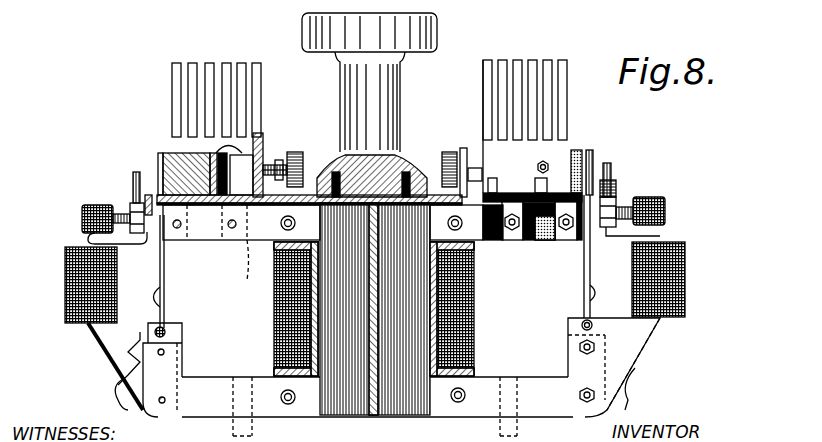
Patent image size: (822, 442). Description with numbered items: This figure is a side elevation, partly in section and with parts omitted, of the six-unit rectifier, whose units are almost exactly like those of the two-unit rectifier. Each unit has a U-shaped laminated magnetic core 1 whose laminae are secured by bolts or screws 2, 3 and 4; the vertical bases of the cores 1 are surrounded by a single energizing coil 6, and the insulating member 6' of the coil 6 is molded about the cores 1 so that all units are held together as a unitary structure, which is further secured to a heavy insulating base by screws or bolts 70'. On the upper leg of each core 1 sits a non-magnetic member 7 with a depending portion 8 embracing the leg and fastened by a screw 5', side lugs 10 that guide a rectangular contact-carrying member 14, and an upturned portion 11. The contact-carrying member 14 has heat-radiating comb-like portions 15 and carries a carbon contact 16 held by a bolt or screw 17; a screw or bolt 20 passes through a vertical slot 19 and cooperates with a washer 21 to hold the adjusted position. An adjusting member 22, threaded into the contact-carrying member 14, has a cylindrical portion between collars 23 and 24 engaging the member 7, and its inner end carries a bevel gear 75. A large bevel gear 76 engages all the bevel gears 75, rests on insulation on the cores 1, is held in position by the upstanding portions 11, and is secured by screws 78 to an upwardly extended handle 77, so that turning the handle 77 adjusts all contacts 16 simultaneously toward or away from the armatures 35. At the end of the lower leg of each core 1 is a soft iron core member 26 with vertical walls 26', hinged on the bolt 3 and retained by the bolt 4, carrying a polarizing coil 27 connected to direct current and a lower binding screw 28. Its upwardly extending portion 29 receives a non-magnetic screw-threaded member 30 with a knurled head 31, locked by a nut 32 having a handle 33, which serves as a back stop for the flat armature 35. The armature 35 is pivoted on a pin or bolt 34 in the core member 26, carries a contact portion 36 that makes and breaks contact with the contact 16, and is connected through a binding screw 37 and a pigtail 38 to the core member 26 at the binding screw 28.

The magnetic core 1 is at (219, 386).
The bolt or screw 2 is at (281, 222).
The bolt or screw 3 is at (166, 400).
The bolt or screw 4 is at (165, 352).
The binding post 5' is at (555, 231).
The energizing coil 6 is at (281, 309).
The insulation 6' is at (465, 308).
The member 7 is at (188, 208).
The depending portion 8 is at (512, 231).
The upturned portion or lug 10 is at (497, 187).
The upturned portion 11 is at (286, 165).
The contact-carrying member 14 is at (532, 131).
The comb-like portion 15 is at (246, 63).
The contact 16 is at (163, 153).
The bolt or screw 17 is at (544, 161).
The slot 19 is at (248, 240).
The screw or bolt 20 is at (247, 198).
The washer 21 is at (218, 153).
The adjusting member 22 is at (262, 160).
The collar 23 is at (463, 150).
The collar 24 is at (449, 150).
The core member 26 is at (378, 309).
The vertically extending wall 26' is at (633, 364).
The coil 27 is at (65, 300).
The binding screw 28 is at (113, 390).
The upwardly extending portion 29 is at (612, 198).
The screw-threaded member 30 is at (625, 210).
The knurled head 31 is at (82, 218).
The locking member or nut 32 is at (133, 212).
The handle 33 is at (136, 175).
The pin or bolt 34 is at (580, 325).
The armature 35 is at (165, 257).
The contact portion 36 is at (590, 158).
The binding screw 37 is at (599, 294).
The conducting wire or pigtail 38 is at (138, 332).
The screw or bolt 70' is at (375, 409).
The bevel gear 75 is at (302, 160).
The large bevel gear 76 is at (391, 308).
The handle 77 is at (404, 72).
The screw 78 is at (334, 178).